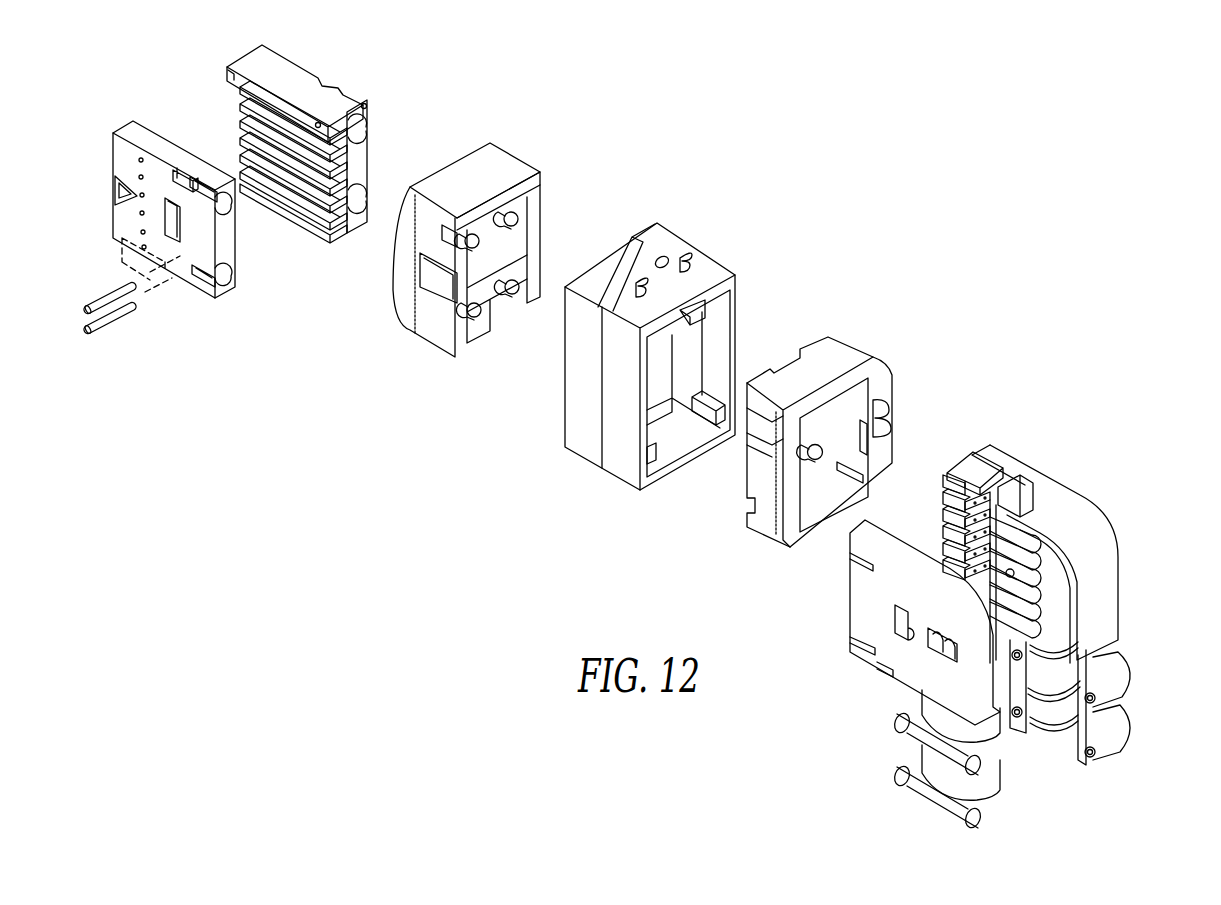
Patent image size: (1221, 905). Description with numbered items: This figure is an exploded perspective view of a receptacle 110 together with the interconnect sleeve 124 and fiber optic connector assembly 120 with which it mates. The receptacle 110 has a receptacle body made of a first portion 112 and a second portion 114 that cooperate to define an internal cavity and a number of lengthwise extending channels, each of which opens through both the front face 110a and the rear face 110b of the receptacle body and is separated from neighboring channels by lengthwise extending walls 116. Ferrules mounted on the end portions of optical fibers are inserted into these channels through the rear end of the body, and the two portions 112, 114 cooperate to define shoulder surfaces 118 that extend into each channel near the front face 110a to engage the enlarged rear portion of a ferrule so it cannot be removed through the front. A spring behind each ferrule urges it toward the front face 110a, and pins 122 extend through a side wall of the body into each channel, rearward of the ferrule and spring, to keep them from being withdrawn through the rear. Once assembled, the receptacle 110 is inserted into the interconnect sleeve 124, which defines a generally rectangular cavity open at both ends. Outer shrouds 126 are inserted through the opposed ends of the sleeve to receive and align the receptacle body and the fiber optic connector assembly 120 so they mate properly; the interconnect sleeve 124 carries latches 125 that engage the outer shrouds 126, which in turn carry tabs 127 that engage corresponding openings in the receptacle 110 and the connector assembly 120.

The receptacle 110 is at (352, 66).
The front face 110a is at (347, 230).
The rear face 110b is at (240, 60).
The first portion 112 is at (278, 62).
The second portion 114 is at (200, 280).
The lengthwise extending walls 116 is at (245, 88).
The shoulder surfaces 118 is at (336, 185).
The fiber optic connector assembly 120 is at (1092, 482).
The pins 122 is at (110, 294).
The interconnect sleeve 124 is at (714, 270).
The latches 125 is at (712, 397).
The outer shrouds 126 is at (500, 163).
The tabs 127 is at (520, 224).